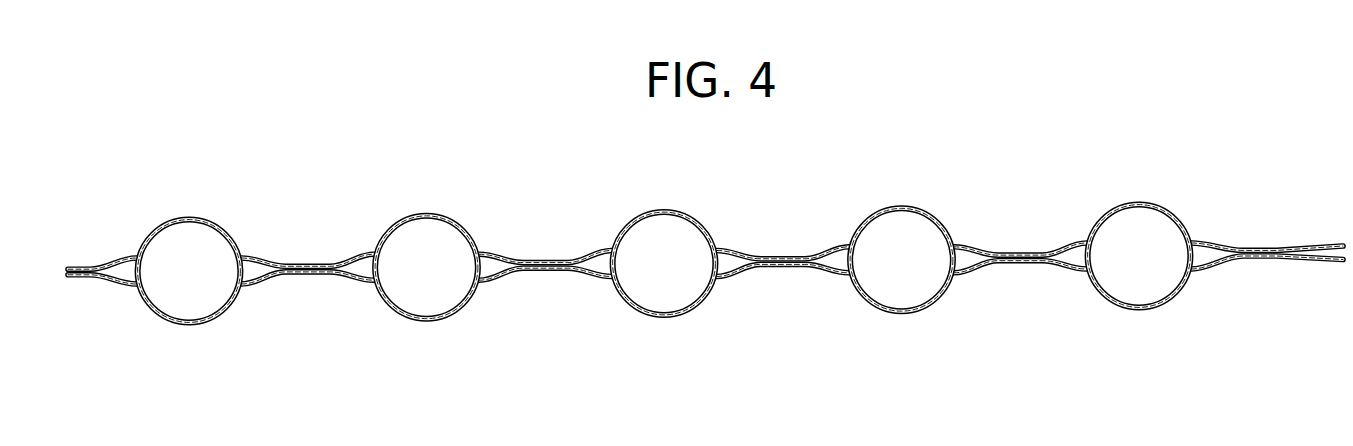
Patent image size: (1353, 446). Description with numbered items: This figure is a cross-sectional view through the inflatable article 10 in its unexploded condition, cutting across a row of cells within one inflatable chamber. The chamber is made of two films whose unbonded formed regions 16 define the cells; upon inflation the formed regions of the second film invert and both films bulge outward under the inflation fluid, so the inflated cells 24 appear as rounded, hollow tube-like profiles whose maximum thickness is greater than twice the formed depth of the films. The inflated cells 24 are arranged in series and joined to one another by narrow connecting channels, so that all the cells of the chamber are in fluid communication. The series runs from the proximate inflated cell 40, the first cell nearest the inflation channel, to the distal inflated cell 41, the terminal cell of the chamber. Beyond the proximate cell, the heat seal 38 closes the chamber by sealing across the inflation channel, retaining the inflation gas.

The inflatable article 10 is at (586, 190).
The formed regions 16 is at (660, 209).
The inflatable cells 24 is at (424, 212).
The heat seal 38 is at (1278, 250).
The proximate inflated cell 40 is at (1145, 203).
The distal inflated cell 41 is at (186, 216).